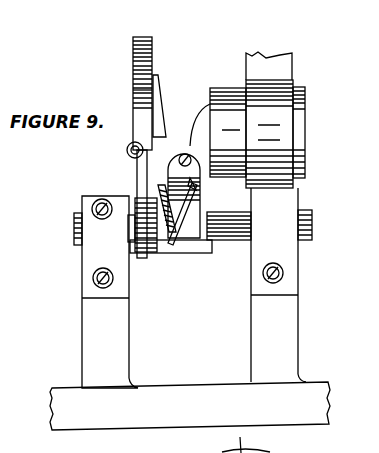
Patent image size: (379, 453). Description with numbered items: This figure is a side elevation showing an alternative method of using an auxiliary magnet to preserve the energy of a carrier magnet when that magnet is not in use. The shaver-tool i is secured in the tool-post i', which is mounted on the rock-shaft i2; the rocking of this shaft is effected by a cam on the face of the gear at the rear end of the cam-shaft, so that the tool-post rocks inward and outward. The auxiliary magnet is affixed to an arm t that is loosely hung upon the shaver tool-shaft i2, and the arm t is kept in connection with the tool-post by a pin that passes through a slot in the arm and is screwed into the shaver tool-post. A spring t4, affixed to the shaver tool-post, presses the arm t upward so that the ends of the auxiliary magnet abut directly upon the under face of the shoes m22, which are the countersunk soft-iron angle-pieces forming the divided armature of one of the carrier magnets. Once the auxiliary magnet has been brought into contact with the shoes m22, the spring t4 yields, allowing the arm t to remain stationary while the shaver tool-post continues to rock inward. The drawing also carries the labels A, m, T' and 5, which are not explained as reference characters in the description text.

The base plate A is at (190, 406).
The rack bar m is at (155, 147).
The shoes m22 is at (137, 97).
The arm t is at (162, 107).
The pivot screw T' is at (115, 149).
The spring t4 is at (135, 192).
The shaver-tool i is at (189, 171).
The tool-post i' is at (171, 215).
The rock-shaft i2 is at (256, 160).
The adjacent figure mark 5 is at (215, 452).